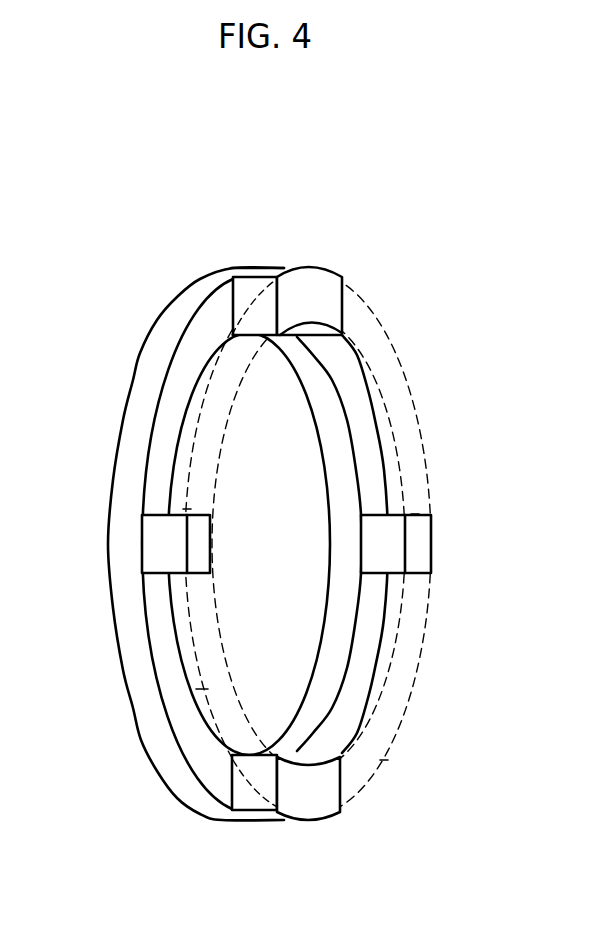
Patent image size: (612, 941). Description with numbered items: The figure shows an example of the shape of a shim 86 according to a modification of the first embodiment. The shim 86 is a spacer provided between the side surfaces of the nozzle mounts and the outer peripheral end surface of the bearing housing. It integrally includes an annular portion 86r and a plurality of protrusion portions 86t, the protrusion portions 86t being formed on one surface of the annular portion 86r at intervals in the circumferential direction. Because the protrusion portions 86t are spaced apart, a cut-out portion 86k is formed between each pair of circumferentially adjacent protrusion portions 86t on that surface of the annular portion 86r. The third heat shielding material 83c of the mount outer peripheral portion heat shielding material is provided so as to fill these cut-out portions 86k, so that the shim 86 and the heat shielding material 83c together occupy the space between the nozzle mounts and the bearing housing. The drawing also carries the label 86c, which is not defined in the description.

The shim 86 is at (146, 342).
The annular portion 86r is at (117, 447).
The third heat shielding material 83c is at (163, 658).
The back circumferential edge 86c is at (213, 375).
The protrusion portions 86t is at (305, 280).
The cut-out portions 86k is at (187, 512).